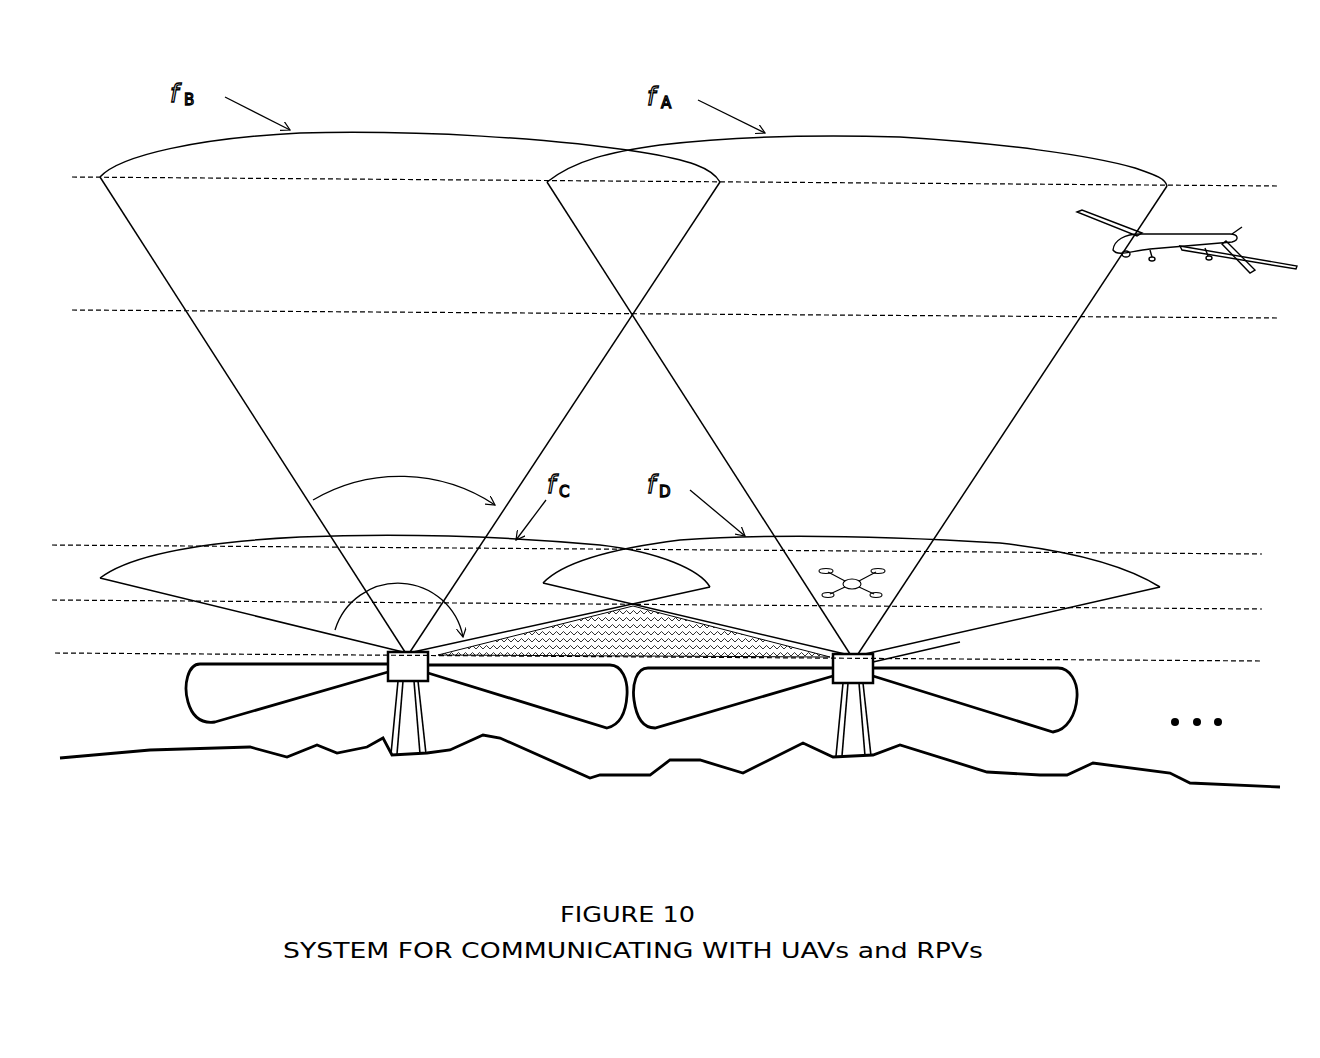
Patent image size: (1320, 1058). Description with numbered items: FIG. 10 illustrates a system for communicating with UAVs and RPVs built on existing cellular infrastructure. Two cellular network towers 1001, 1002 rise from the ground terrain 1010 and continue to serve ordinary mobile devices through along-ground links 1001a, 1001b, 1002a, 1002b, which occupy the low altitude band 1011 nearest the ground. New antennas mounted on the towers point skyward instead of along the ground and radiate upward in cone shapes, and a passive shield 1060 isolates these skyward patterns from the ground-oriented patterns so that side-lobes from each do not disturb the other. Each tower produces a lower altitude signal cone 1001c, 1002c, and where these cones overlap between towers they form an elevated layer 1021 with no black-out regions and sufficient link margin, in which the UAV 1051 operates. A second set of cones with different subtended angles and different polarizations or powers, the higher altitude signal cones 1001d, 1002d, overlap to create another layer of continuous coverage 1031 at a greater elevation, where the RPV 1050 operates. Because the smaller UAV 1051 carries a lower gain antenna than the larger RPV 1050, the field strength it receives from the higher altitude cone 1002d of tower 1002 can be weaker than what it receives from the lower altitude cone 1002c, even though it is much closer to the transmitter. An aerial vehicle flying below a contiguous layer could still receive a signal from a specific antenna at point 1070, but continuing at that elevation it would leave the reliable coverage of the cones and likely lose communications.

The cellular network tower 1001 is at (383, 682).
The cellular network tower 1002 is at (830, 685).
The along-ground link 1001a is at (222, 720).
The along-ground link 1001b is at (563, 702).
The lower altitude signal cone 1001c is at (250, 540).
The higher altitude signal cone 1001d is at (400, 133).
The along-ground link 1002a is at (690, 709).
The along-ground link 1002b is at (1012, 709).
The lower altitude signal cone 1002c is at (1010, 547).
The higher altitude signal cone 1002d is at (975, 140).
The ground terrain 1010 is at (1068, 779).
The low altitude band 1011 is at (90, 655).
The elevated layer 1021 is at (67, 502).
The layer of continuous coverage 1031 is at (77, 181).
The RPV 1050 is at (1187, 222).
The UAV 1051 is at (910, 473).
The passive shield 1060 is at (918, 660).
The point 1070 is at (493, 658).